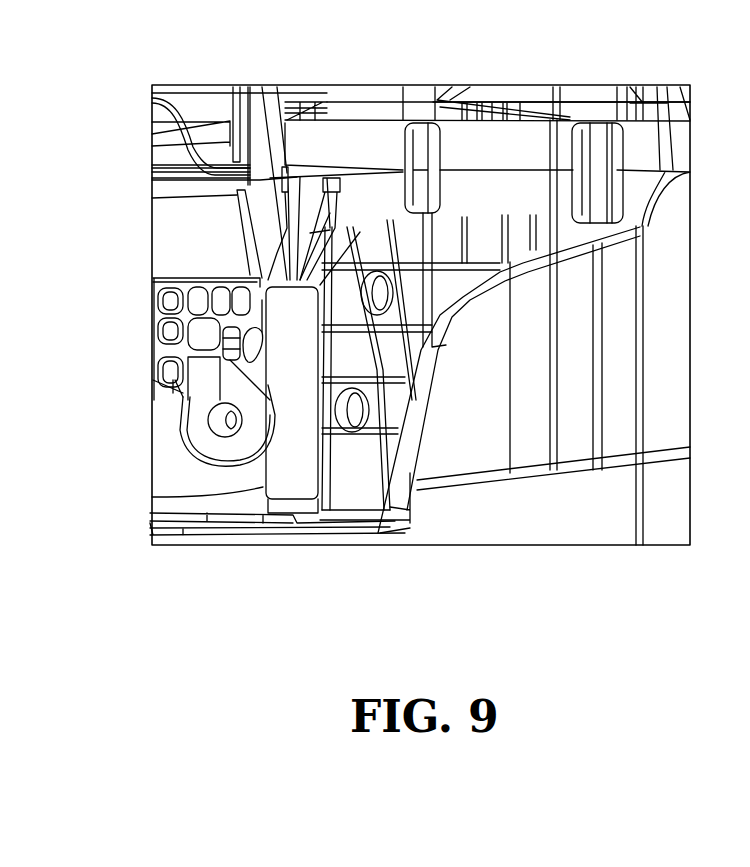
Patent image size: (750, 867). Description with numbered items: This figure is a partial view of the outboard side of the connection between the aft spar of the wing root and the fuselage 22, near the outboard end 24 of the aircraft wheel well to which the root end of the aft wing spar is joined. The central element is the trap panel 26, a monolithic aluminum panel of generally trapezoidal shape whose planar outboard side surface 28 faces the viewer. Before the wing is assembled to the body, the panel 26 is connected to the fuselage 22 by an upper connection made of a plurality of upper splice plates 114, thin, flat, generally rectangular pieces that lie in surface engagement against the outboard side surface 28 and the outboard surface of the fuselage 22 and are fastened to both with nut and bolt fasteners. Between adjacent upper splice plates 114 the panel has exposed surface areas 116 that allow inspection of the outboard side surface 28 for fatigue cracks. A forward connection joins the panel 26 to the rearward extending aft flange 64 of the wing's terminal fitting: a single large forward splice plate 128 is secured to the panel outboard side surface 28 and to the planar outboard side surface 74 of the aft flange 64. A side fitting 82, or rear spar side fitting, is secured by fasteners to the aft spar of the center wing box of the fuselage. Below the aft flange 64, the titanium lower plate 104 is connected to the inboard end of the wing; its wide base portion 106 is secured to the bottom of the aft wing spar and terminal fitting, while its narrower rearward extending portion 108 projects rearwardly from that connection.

The fuselage 22 is at (383, 133).
The outboard end of the aircraft wheel well 24 is at (603, 515).
The panel 26 is at (415, 405).
The outboard side surface 28 is at (337, 173).
The aft flange 64 is at (263, 488).
The outboard side surface 74 is at (262, 282).
The side fitting 82 is at (272, 197).
The lower plate 104 is at (200, 533).
The base portion 106 is at (167, 533).
The rearward extending portion 108 is at (380, 527).
The upper splice plate 114 is at (437, 150).
The exposed surface areas 116 is at (497, 172).
The large forward splice plate 128 is at (262, 305).